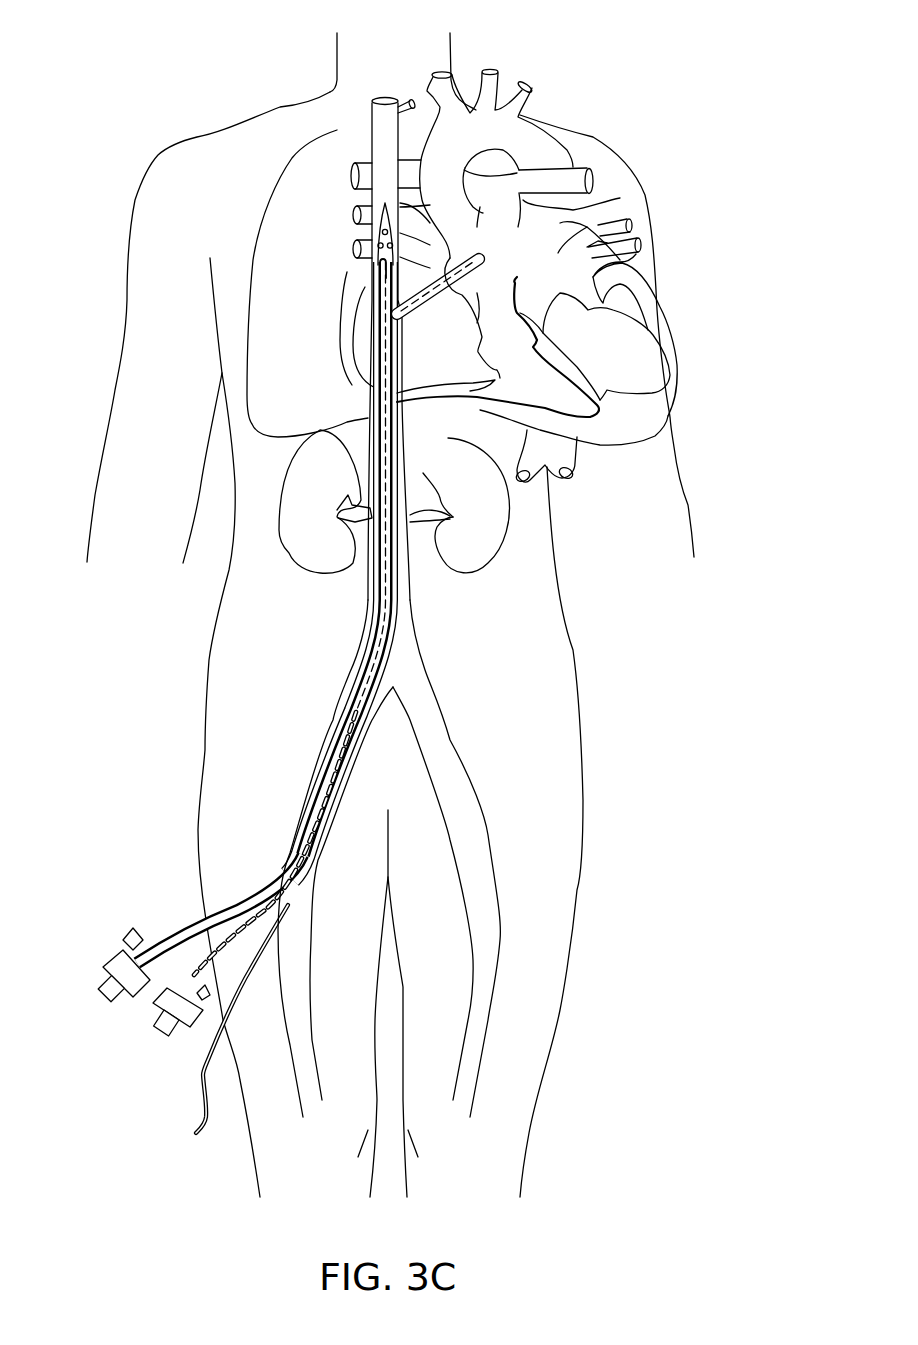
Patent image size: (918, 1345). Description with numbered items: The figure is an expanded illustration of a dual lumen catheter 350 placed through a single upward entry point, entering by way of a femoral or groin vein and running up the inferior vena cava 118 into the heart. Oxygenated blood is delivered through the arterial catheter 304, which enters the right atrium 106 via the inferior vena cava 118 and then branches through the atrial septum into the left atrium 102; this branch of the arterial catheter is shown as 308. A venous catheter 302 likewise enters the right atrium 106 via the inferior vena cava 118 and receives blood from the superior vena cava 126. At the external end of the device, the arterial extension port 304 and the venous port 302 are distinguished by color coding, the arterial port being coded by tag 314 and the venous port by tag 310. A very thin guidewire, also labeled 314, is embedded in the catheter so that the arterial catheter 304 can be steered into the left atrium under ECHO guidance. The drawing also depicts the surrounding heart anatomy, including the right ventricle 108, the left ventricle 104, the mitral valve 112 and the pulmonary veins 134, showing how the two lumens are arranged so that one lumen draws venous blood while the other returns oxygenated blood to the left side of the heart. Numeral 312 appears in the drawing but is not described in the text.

The left atrium 102 is at (565, 228).
The left ventricle 104 is at (633, 357).
The right atrium 106 is at (423, 355).
The right ventricle 108 is at (563, 397).
The mitral valve 112 is at (590, 313).
The inferior vena cava 118 is at (305, 768).
The superior vena cava 126 is at (370, 266).
The pulmonary veins 134 is at (630, 222).
The venous catheter 302 is at (162, 943).
The arterial catheter 304 is at (193, 973).
The branch of arterial catheter 308 is at (447, 262).
The tag 310 is at (133, 930).
The guidewire 312 is at (200, 1000).
The tag 314 is at (195, 1135).
The dual lumen catheter 350 is at (282, 258).